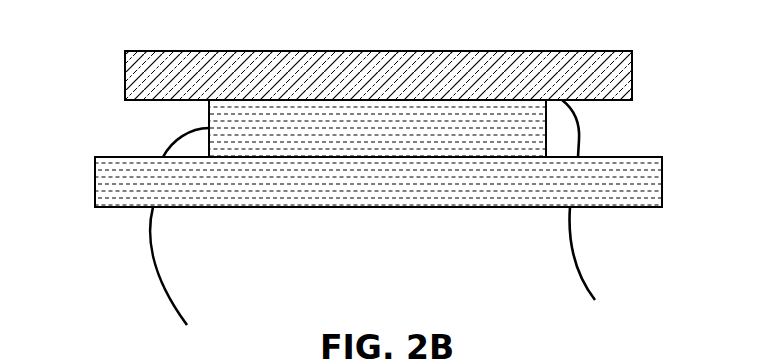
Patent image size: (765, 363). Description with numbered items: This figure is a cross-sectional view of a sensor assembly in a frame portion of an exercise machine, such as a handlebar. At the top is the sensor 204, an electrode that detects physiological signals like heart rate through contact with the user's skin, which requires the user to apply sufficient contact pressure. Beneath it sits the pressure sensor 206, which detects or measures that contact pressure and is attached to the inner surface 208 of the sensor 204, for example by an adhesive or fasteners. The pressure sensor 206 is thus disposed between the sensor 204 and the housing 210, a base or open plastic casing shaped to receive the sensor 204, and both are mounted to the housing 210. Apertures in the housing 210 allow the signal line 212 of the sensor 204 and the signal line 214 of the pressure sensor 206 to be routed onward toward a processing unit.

The sensor 204 is at (193, 51).
The pressure sensor 206 is at (208, 118).
The inner surface 208 is at (615, 100).
The housing 210 is at (662, 180).
The signal line 212 is at (580, 137).
The signal line 214 is at (163, 155).